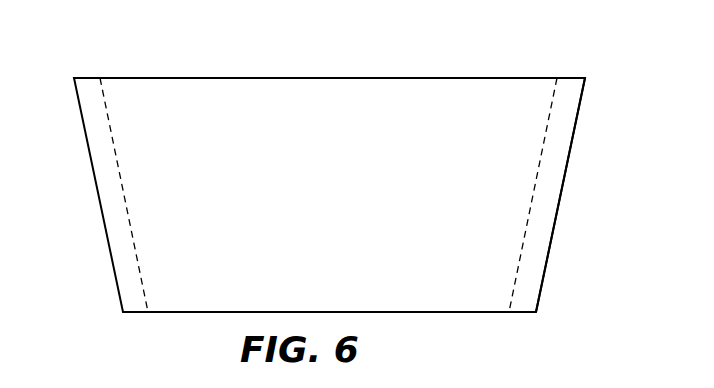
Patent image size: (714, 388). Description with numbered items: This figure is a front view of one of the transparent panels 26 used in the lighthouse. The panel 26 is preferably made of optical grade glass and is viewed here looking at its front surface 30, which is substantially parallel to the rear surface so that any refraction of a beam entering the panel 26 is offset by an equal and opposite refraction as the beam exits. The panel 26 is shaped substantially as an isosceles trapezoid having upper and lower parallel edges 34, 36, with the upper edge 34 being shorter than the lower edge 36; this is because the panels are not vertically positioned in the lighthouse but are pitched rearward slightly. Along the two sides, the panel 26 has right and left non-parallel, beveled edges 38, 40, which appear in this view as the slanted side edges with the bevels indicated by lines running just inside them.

The front surface 30 is at (341, 194).
The lower edge 36 is at (410, 78).
The upper edge 34 is at (413, 312).
The right beveled edge 38 is at (126, 234).
The left beveled edge 40 is at (528, 256).
The transparent panel 26 is at (513, 218).